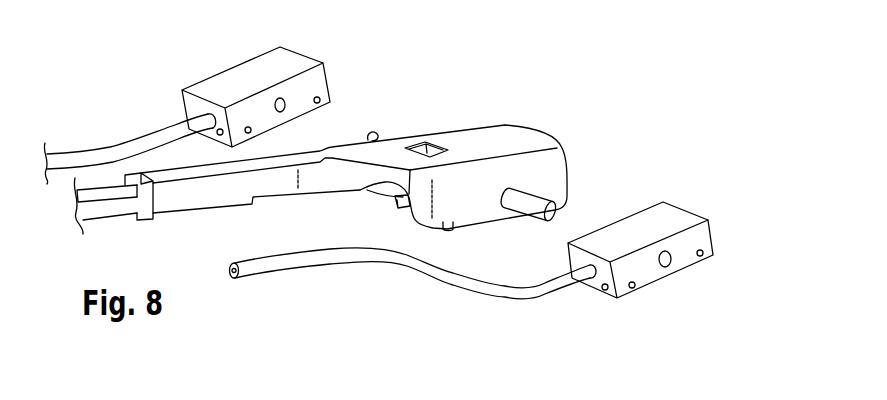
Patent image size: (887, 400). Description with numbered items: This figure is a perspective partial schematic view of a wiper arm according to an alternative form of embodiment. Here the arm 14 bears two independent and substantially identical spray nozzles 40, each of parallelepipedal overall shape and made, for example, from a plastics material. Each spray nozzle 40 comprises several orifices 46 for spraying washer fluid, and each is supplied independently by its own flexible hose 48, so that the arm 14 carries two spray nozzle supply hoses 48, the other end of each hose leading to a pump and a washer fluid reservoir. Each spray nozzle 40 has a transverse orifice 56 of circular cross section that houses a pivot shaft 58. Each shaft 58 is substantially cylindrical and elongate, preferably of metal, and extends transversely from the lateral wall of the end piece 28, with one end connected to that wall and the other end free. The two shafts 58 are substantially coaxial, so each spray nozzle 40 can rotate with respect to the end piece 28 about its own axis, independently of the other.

The arm 14 is at (286, 208).
The end piece 28 is at (336, 173).
The spray nozzle 40 is at (322, 43).
The orifice 46 is at (319, 103).
The flexible hose 48 is at (108, 152).
The transverse orifice 56 is at (280, 100).
The pivot shaft 58 is at (374, 134).